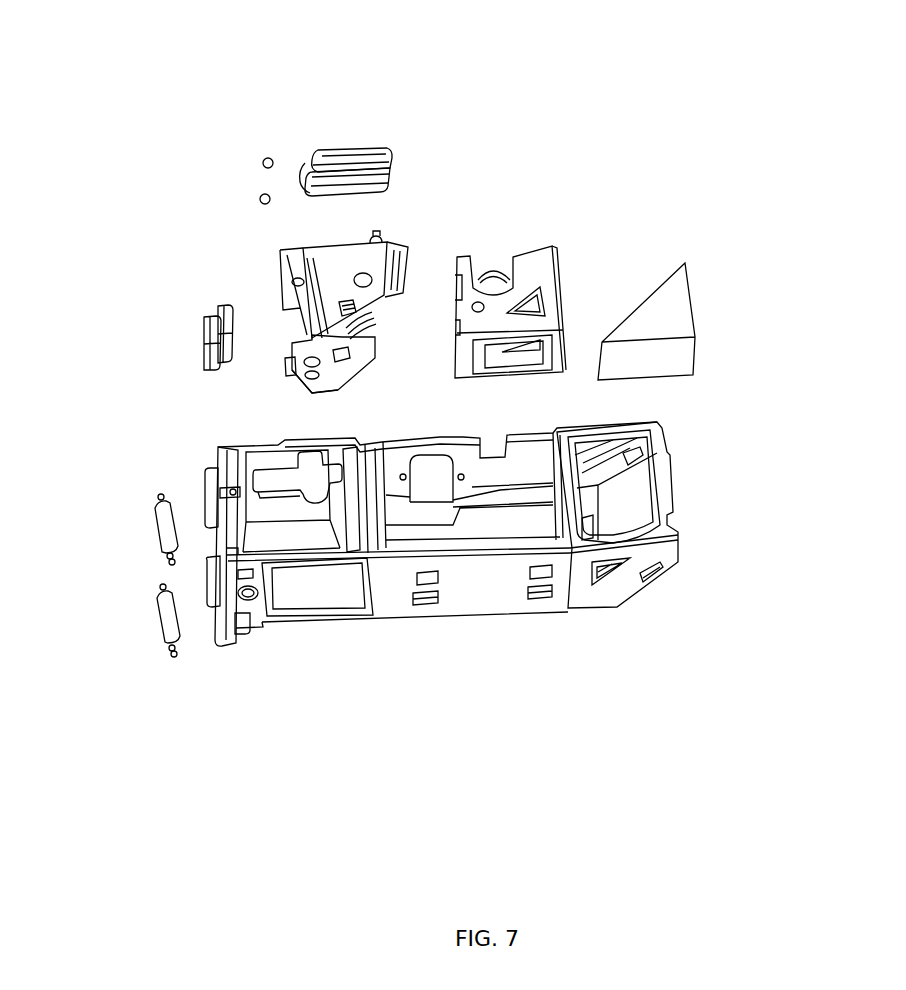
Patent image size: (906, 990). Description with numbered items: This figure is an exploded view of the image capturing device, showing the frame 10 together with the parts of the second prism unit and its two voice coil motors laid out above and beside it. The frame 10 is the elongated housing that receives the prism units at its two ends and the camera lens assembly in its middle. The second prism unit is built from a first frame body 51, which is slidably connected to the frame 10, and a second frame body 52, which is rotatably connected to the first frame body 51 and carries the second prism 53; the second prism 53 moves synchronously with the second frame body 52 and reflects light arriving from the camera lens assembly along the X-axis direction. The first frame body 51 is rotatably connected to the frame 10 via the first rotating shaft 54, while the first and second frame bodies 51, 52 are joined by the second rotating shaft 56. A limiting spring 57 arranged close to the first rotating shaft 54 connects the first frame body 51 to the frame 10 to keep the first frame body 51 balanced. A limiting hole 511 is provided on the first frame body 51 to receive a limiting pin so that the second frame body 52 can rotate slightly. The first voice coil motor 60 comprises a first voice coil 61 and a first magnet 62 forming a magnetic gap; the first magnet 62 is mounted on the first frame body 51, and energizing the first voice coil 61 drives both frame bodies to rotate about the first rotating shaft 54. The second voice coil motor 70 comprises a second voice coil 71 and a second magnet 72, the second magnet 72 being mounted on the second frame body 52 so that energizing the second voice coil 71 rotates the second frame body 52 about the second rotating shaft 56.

The frame 10 is at (475, 592).
The first frame body 51 is at (355, 263).
The limiting hole 511 is at (344, 304).
The second frame body 52 is at (537, 265).
The second prism 53 is at (677, 307).
The first rotating shaft 54 is at (293, 368).
The second rotating shaft 56 is at (368, 275).
The limiting spring 57 is at (170, 530).
The first voice coil motor 60 is at (340, 52).
The first voice coil 61 is at (315, 157).
The first magnet 62 is at (352, 170).
The second voice coil motor 70 is at (103, 272).
The second voice coil 71 is at (207, 315).
The second magnet 72 is at (207, 348).